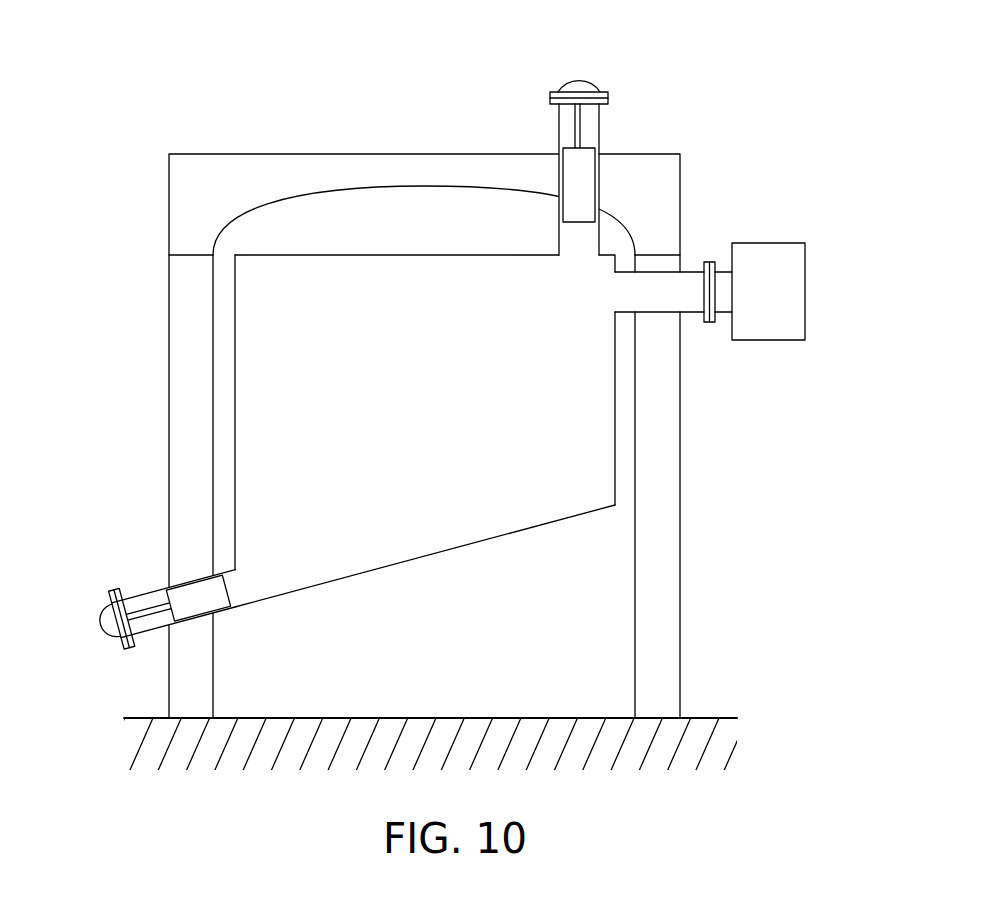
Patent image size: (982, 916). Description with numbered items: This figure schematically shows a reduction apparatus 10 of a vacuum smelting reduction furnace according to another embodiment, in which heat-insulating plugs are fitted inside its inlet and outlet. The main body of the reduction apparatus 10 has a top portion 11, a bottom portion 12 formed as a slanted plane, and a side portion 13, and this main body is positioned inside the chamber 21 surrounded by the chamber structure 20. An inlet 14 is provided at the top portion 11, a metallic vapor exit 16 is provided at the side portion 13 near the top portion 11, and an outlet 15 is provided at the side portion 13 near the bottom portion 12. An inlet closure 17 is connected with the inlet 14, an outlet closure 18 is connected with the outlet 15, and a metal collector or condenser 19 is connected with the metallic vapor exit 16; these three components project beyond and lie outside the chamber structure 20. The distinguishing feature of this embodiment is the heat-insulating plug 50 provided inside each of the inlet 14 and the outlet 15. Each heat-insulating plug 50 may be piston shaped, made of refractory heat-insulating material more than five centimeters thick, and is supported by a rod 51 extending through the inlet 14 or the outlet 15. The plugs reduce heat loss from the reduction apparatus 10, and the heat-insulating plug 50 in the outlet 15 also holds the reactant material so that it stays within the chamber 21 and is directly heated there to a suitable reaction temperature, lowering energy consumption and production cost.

The reduction apparatus 10 is at (435, 421).
The top portion 11 is at (394, 255).
The bottom portion 12 is at (385, 568).
The side portion 13 is at (237, 415).
The inlet 14 is at (600, 193).
The outlet 15 is at (182, 578).
The metallic vapor exit 16 is at (655, 315).
The inlet closure 17 is at (578, 82).
The outlet closure 18 is at (105, 614).
The metal collector or condenser 19 is at (790, 300).
The chamber structure 20 is at (200, 312).
The chamber 21 is at (595, 610).
The heat-insulating plug 50 is at (568, 177).
The rod 51 is at (580, 123).